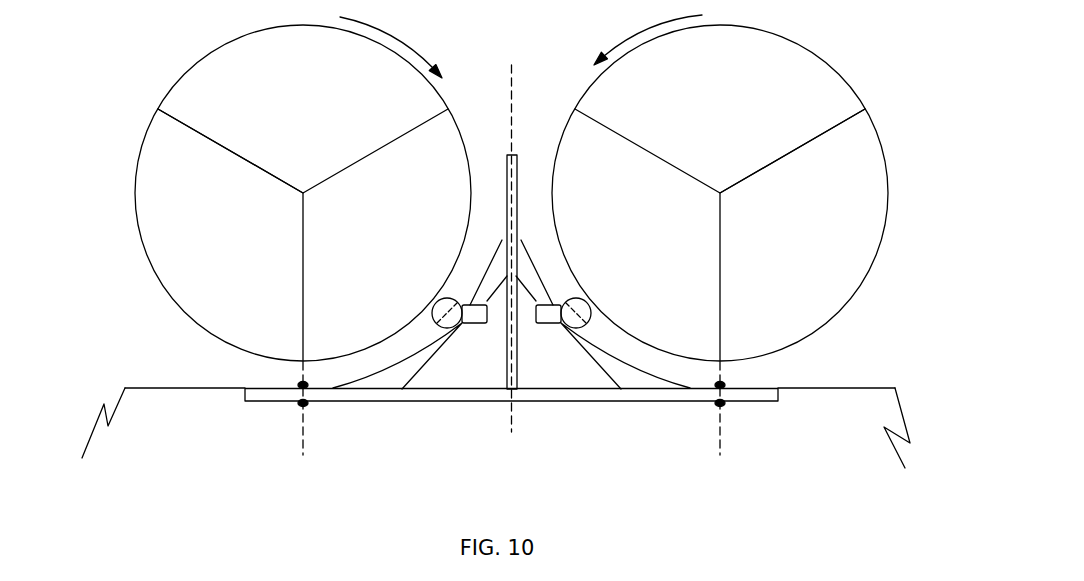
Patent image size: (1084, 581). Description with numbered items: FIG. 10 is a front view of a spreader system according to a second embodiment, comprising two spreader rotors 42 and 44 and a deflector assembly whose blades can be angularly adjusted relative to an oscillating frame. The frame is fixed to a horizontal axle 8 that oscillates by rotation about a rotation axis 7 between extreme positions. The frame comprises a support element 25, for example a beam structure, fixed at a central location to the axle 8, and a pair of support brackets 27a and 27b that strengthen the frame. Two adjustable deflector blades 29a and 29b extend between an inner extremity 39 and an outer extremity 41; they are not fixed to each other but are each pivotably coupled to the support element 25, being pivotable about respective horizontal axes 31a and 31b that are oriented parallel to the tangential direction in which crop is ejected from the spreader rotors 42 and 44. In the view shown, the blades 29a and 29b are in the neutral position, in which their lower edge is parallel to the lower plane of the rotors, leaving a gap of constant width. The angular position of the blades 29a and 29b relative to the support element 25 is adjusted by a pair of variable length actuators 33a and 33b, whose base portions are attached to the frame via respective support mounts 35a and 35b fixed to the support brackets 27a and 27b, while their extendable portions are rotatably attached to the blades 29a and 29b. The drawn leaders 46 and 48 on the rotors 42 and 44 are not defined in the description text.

The rotation axis 7 is at (513, 82).
The horizontal axle 8 is at (507, 164).
The support element 25 is at (443, 401).
The support bracket 27a is at (457, 377).
The support bracket 27b is at (535, 377).
The adjustable deflector blade 29a is at (200, 387).
The adjustable deflector blade 29b is at (830, 387).
The horizontal axis 31a is at (298, 452).
The horizontal axis 31b is at (723, 450).
The variable length actuator 33a is at (446, 308).
The variable length actuator 33b is at (578, 308).
The support mount 35a is at (473, 313).
The support mount 35b is at (555, 312).
The inner extremity 39 is at (502, 240).
The outer extremity 41 is at (490, 444).
The spreader rotor 42 is at (281, 109).
The spreader rotor 44 is at (706, 116).
The first roller spoke 46 is at (303, 193).
The second roller spoke 48 is at (720, 193).